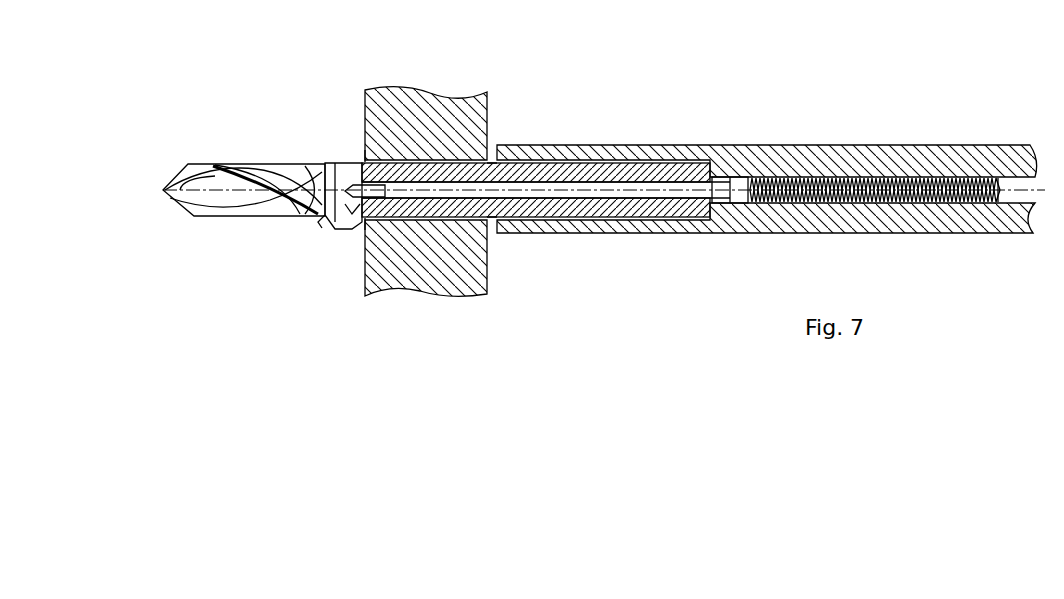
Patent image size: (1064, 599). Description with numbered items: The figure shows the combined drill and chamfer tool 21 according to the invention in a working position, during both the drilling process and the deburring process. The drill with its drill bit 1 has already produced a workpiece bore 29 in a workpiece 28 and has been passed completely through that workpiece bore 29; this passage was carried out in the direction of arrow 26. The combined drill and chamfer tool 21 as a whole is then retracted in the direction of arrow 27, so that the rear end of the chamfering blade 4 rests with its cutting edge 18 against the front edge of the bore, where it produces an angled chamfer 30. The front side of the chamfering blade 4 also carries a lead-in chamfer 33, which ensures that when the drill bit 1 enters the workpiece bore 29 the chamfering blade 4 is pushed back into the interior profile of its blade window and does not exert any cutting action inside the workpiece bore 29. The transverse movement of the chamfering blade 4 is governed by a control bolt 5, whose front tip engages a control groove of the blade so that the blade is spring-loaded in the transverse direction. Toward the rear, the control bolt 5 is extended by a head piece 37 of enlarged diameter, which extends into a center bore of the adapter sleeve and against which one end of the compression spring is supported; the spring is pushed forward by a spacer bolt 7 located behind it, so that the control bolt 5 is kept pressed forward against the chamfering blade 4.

The drill bit 1 is at (268, 183).
The chamfering blade 4 is at (343, 207).
The control bolt 5 is at (624, 201).
The spacer bolt 7 is at (1018, 187).
The cutting edge 18 is at (355, 224).
The combined drill and chamfer tool 21 is at (596, 126).
The arrow 26 is at (196, 120).
The arrow 27 is at (258, 258).
The workpiece 28 is at (443, 119).
The workpiece bore 29 is at (468, 154).
The angled chamfer 30 is at (369, 151).
The lead-in chamfer 33 is at (326, 227).
The head piece 37 is at (735, 205).